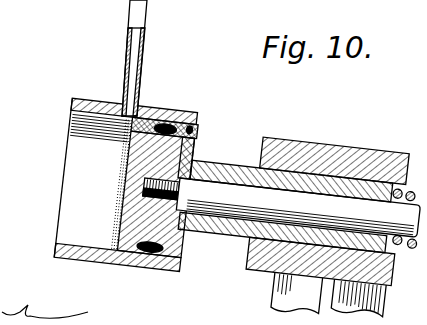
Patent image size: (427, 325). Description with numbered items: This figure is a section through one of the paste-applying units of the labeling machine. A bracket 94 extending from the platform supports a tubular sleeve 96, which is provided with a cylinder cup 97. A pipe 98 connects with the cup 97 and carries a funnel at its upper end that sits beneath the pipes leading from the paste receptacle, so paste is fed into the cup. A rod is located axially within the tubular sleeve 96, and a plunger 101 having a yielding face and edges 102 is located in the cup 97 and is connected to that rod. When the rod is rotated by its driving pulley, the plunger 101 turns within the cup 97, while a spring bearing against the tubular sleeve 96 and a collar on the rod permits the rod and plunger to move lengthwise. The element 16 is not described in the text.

The sealing rings 16 is at (408, 246).
The bracket 94 is at (329, 138).
The tubular sleeve 96 is at (240, 168).
The cylinder cup 97 is at (178, 112).
The pipe 98 is at (139, 49).
The plunger 101 is at (196, 116).
The yielding face and edges 102 is at (122, 192).